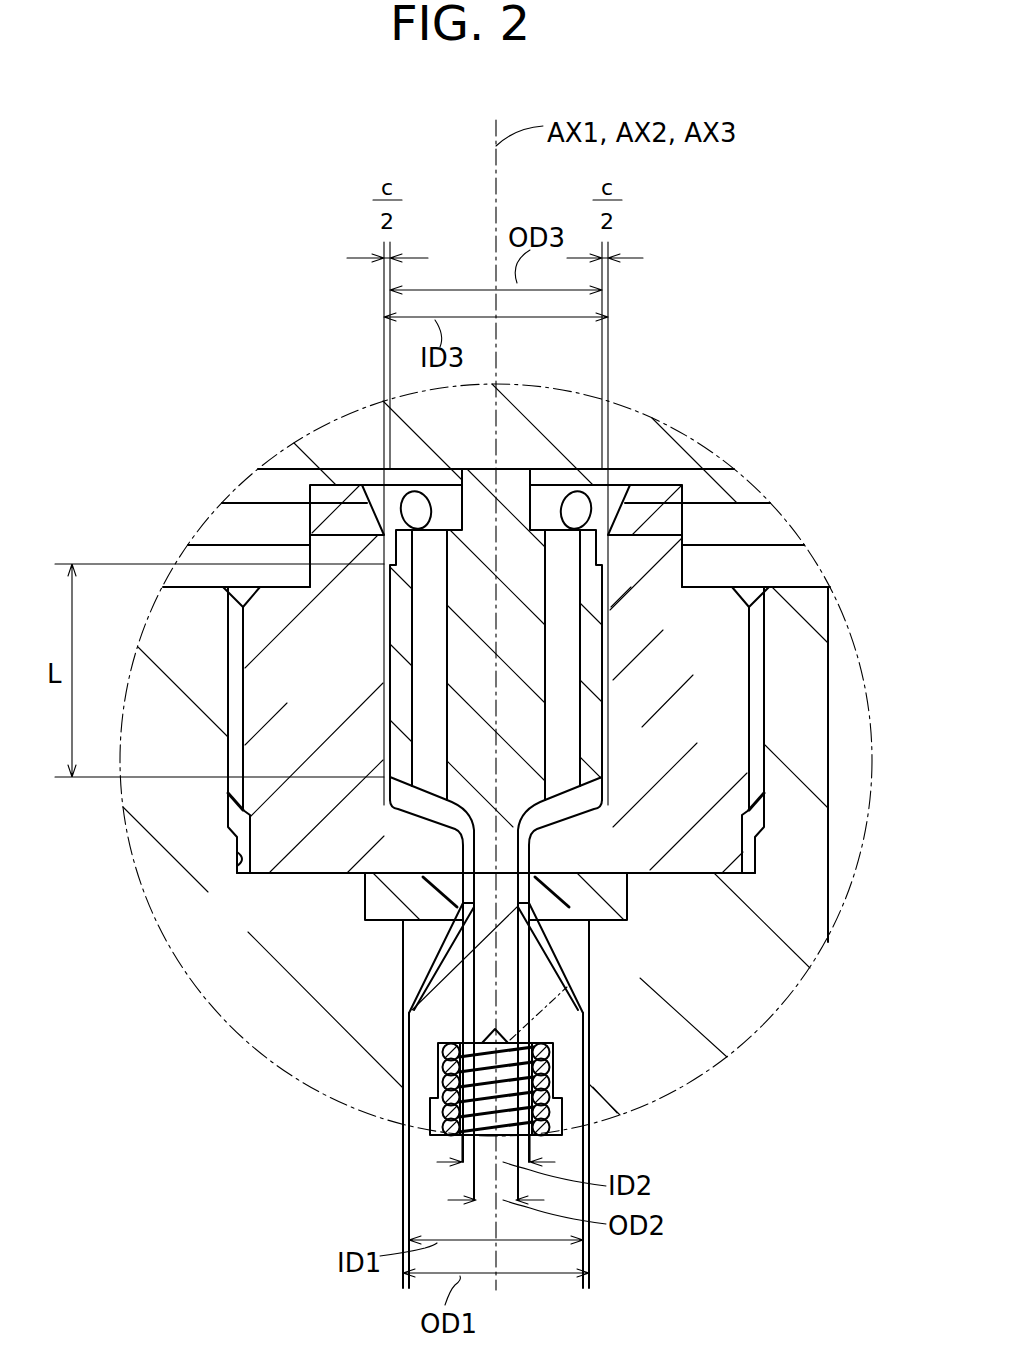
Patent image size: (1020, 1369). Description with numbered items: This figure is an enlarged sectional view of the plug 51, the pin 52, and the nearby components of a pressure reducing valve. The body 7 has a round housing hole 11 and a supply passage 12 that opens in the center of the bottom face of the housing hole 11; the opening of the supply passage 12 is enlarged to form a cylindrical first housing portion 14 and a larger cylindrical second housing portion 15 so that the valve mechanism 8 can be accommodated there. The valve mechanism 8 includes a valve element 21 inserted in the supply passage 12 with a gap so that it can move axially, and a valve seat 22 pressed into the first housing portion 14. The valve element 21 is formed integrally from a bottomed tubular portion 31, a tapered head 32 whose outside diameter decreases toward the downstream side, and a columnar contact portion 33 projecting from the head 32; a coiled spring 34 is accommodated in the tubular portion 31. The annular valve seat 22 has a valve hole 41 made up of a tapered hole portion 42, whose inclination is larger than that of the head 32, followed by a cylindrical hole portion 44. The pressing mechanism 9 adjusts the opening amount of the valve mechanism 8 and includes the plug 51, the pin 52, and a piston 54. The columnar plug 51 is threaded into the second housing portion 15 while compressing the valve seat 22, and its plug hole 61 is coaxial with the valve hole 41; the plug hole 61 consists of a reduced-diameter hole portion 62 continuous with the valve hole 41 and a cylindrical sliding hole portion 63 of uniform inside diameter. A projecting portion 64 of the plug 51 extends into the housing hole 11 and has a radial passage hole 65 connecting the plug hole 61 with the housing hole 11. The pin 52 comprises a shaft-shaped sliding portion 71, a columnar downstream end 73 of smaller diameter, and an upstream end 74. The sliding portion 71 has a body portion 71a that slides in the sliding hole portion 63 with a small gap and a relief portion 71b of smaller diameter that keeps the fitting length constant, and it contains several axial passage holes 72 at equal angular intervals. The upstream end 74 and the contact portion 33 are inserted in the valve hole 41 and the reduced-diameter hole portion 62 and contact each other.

The body 7 is at (131, 853).
The valve mechanism 8 is at (391, 1151).
The pressing mechanism 9 is at (781, 420).
The housing hole 11 is at (195, 585).
The supply passage 12 is at (405, 990).
The first housing portion 14 is at (382, 910).
The second housing portion 15 is at (237, 873).
The valve element 21 is at (405, 1042).
The valve seat 22 is at (382, 910).
The tubular portion 31 is at (572, 1083).
The head 32 is at (553, 977).
The contact portion 33 is at (418, 902).
The coiled spring 34 is at (545, 1130).
The valve hole 41 is at (489, 973).
The tapered hole portion 42 is at (535, 922).
The cylindrical hole portion 44 is at (560, 893).
The plug 51 is at (728, 587).
The pin 52 is at (532, 465).
The piston 54 is at (330, 437).
The plug hole 61 is at (677, 730).
The reduced-diameter hole portion 62 is at (527, 846).
The sliding hole portion 63 is at (598, 650).
The projecting portion 64 is at (668, 493).
The passage hole 65 is at (311, 514).
The sliding portion 71 is at (434, 665).
The body portion 71a is at (390, 667).
The relief portion 71b is at (400, 542).
The passage holes 72 is at (417, 752).
The downstream end 73 is at (483, 500).
The upstream end 74 is at (463, 832).